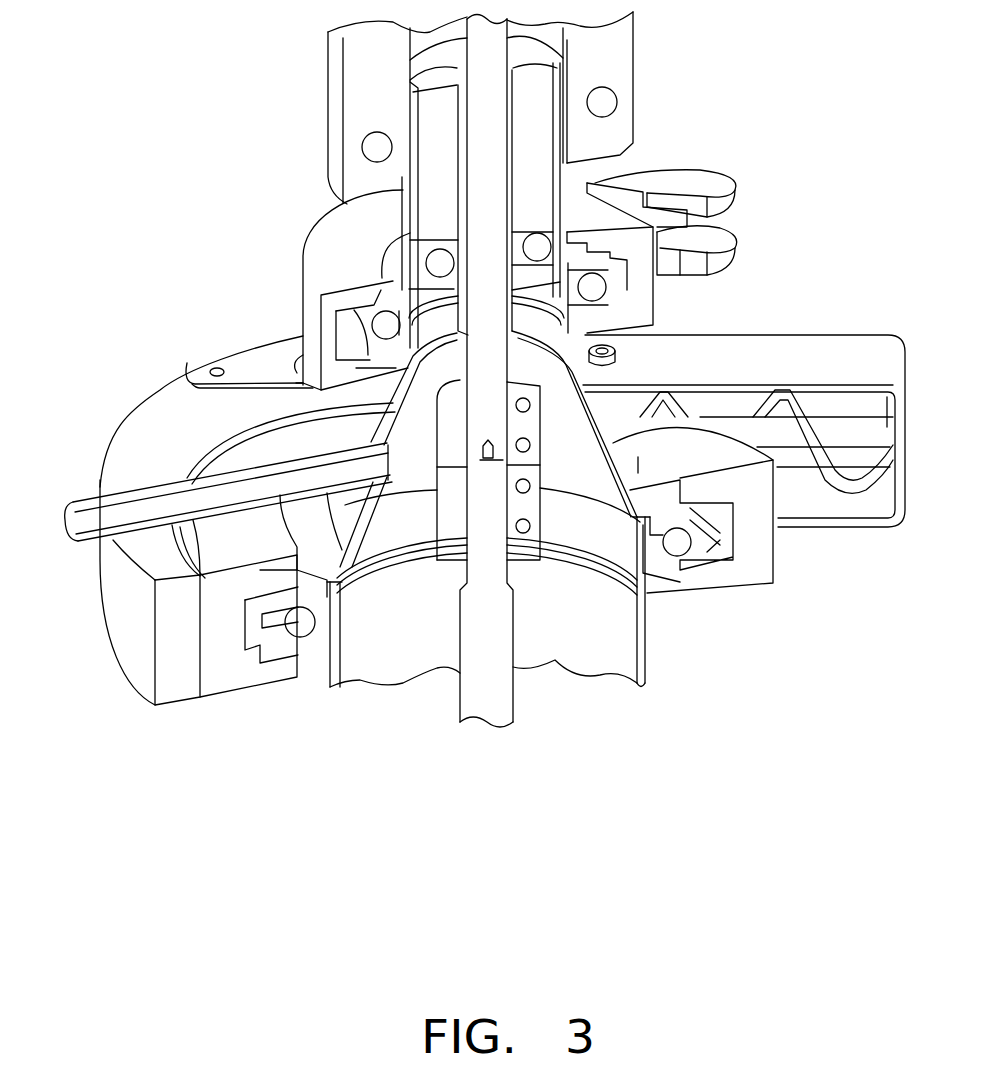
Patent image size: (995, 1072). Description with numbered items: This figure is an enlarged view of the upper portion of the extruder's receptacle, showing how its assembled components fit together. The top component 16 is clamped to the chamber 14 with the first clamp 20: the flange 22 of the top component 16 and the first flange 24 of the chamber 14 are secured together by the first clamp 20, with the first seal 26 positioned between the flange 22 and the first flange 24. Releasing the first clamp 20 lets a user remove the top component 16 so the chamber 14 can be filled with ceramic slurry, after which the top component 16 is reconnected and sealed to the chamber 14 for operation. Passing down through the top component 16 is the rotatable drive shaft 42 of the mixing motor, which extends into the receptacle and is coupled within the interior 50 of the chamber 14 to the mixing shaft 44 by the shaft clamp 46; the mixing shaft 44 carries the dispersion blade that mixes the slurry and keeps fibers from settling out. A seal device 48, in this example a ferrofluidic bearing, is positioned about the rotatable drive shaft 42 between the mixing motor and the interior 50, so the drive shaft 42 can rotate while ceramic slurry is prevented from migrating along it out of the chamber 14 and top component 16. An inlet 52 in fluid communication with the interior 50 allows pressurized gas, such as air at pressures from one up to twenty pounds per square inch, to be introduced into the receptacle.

The chamber 14 is at (637, 655).
The top component 16 is at (625, 424).
The first clamp 20 is at (128, 618).
The flange 22 is at (693, 508).
The first flange 24 is at (702, 560).
The first seal 26 is at (678, 552).
The rotatable drive shaft 42 is at (487, 207).
The mixing shaft 44 is at (487, 697).
The shaft clamp 46 is at (452, 485).
The seal device 48 is at (560, 196).
The interior 50 is at (560, 655).
The inlet 52 is at (408, 440).